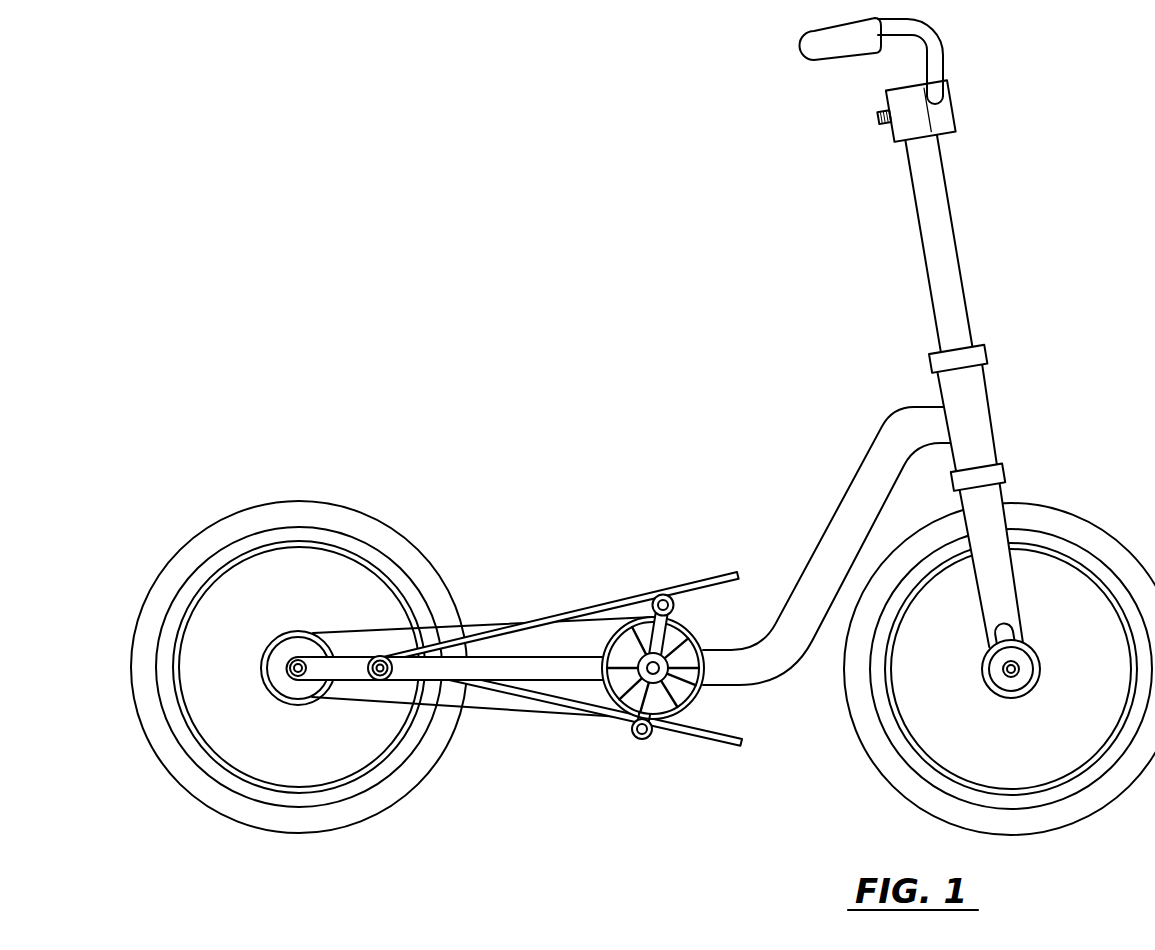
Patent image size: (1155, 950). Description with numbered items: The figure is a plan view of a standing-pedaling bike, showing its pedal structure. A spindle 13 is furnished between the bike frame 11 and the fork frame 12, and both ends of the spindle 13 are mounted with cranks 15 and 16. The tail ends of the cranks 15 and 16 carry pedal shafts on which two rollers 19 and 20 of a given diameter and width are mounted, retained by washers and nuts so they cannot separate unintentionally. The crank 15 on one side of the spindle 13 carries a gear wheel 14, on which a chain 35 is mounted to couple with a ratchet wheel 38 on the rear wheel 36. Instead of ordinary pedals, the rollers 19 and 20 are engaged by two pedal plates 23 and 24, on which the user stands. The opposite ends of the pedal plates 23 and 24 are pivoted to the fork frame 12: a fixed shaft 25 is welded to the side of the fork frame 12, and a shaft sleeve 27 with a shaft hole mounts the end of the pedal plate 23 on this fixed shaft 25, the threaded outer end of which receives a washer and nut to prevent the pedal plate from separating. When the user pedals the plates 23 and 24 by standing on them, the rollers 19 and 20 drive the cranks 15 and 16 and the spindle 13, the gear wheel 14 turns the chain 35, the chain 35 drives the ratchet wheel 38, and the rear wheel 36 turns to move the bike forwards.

The bike frame 11 is at (795, 518).
The fork frame 12 is at (350, 666).
The spindle 13 is at (670, 673).
The gear wheel 14 is at (700, 697).
The crank 15 is at (670, 630).
The crank 16 is at (651, 728).
The roller 19 is at (672, 594).
The roller 20 is at (634, 738).
The pedal plate 23 is at (597, 600).
The pedal plate 24 is at (581, 706).
The fixed shaft 25 is at (368, 680).
The shaft sleeve 27 is at (383, 682).
The chain 35 is at (485, 714).
The rear wheel 36 is at (340, 522).
The ratchet wheel 38 is at (293, 647).